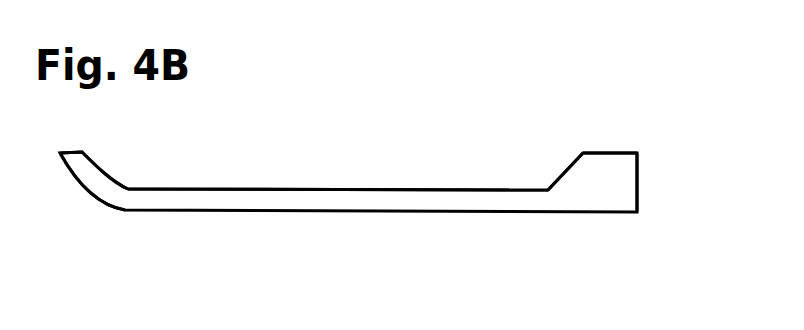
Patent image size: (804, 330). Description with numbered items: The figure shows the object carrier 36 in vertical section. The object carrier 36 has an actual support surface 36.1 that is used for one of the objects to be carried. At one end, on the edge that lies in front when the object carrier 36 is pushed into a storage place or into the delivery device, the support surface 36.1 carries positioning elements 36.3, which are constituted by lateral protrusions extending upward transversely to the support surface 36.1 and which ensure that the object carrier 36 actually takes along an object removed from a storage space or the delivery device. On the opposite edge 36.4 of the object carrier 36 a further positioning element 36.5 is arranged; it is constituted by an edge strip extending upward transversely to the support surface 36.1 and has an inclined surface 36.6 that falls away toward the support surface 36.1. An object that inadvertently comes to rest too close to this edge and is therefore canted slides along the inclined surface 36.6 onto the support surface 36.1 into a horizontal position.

The object carrier 36 is at (348, 224).
The support surface 36.1 is at (421, 187).
The positioning elements 36.3 is at (88, 177).
The edge 36.4 is at (637, 190).
The further positioning element 36.5 is at (596, 187).
The inclined surface 36.6 is at (562, 172).